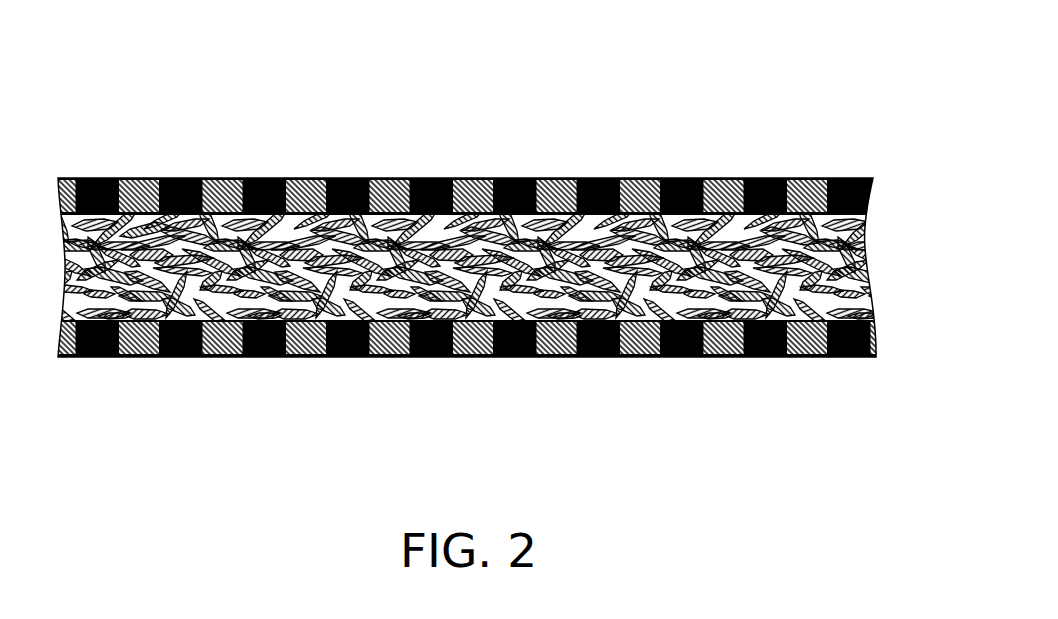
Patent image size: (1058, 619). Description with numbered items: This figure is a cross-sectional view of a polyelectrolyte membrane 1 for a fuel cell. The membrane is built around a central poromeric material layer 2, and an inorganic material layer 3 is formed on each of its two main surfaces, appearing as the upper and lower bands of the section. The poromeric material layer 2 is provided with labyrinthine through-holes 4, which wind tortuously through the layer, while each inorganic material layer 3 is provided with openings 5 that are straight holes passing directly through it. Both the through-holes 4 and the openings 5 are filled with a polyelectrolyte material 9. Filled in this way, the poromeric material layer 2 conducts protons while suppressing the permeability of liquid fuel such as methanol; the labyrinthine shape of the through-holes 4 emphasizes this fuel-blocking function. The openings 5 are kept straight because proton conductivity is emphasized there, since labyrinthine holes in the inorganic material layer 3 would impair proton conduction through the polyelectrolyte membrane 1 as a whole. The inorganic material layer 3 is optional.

The polyelectrolyte membrane 1 is at (565, 88).
The poromeric material layer 2 is at (500, 217).
The inorganic material layer 3 is at (682, 178).
The labyrinthine through-hole 4 is at (151, 230).
The opening 5 is at (318, 178).
The polyelectrolyte material 9 is at (231, 220).